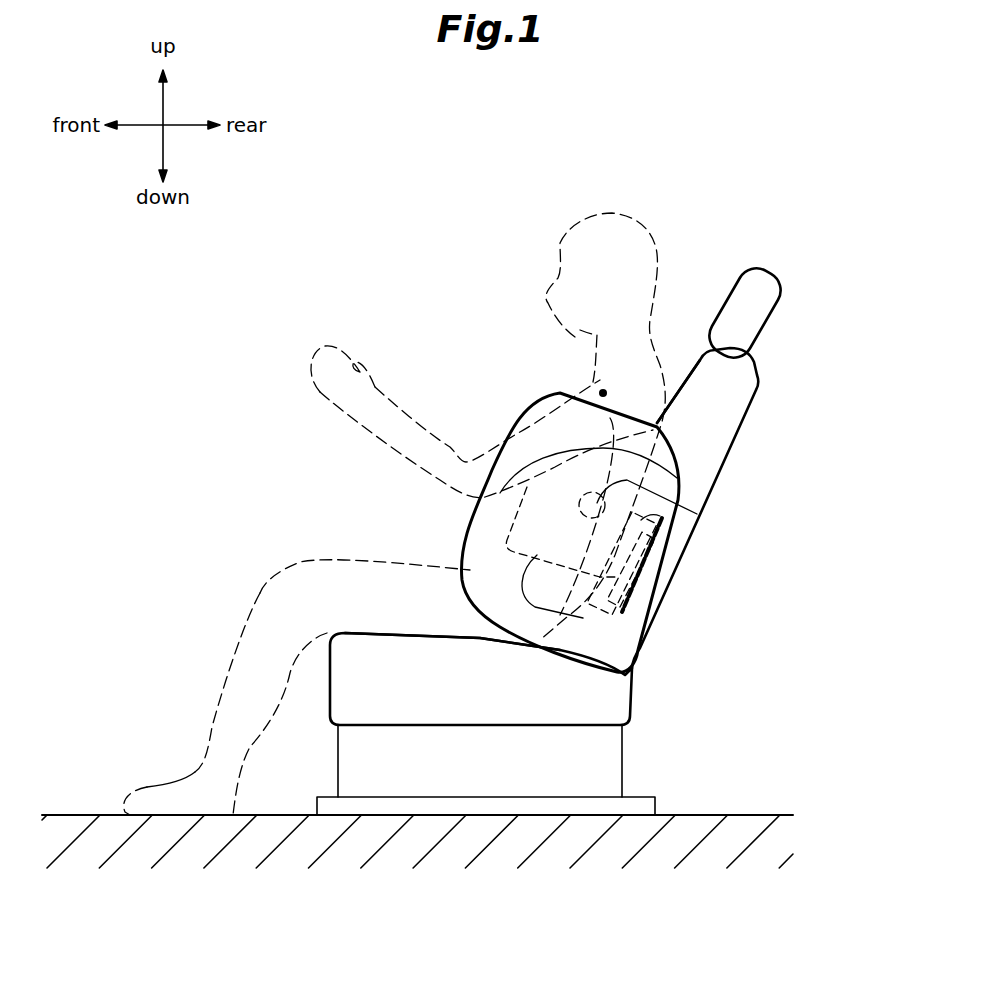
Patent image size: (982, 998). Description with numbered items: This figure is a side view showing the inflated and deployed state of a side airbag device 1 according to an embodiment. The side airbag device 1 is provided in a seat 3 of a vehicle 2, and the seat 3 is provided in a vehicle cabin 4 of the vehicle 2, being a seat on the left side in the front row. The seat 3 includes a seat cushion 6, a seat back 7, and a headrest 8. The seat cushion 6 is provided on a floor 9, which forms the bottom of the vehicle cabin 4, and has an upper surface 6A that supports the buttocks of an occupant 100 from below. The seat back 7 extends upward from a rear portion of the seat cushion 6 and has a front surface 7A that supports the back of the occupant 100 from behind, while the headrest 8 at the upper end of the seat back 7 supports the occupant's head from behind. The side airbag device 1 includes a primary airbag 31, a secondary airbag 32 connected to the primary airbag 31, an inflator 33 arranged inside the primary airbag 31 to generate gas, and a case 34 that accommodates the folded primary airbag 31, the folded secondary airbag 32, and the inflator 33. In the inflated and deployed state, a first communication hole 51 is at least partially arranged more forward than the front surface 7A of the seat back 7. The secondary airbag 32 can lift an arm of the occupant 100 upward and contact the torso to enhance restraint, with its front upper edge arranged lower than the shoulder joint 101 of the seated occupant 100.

The side airbag device 1 is at (585, 546).
The vehicle 2 is at (418, 198).
The seat 3 is at (767, 260).
The vehicle cabin 4 is at (249, 311).
The seat cushion 6 is at (435, 697).
The upper surface 6A is at (360, 630).
The seat back 7 is at (733, 400).
The front surface 7A is at (697, 360).
The headrest 8 is at (763, 295).
The floor 9 is at (68, 814).
The primary airbag 31 is at (473, 533).
The secondary airbag 32 is at (640, 655).
The inflator 33 is at (640, 595).
The case 34 is at (680, 533).
The first communication hole 51 is at (700, 510).
The occupant 100 is at (612, 214).
The shoulder joint 101 is at (600, 390).